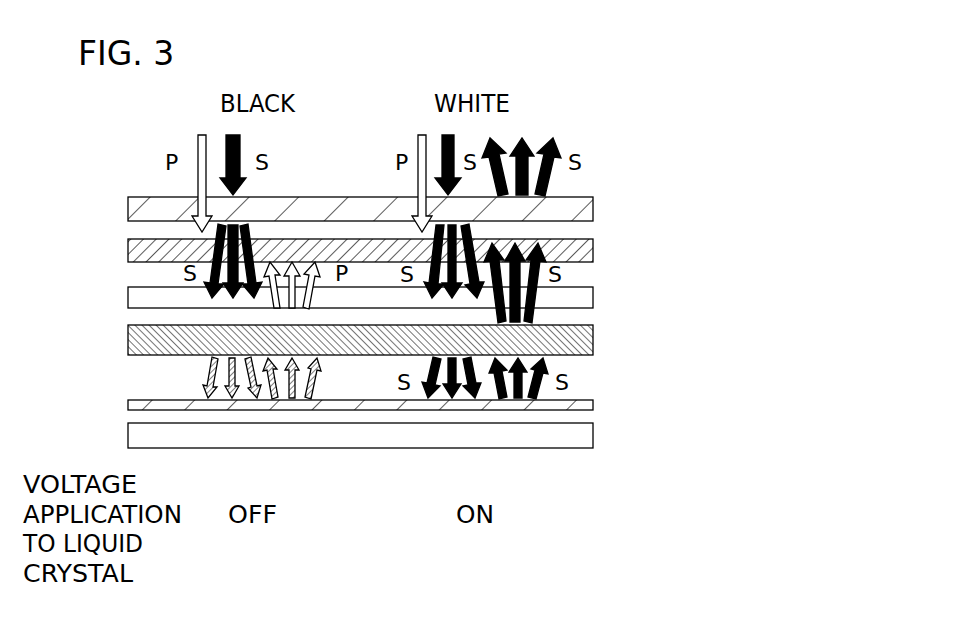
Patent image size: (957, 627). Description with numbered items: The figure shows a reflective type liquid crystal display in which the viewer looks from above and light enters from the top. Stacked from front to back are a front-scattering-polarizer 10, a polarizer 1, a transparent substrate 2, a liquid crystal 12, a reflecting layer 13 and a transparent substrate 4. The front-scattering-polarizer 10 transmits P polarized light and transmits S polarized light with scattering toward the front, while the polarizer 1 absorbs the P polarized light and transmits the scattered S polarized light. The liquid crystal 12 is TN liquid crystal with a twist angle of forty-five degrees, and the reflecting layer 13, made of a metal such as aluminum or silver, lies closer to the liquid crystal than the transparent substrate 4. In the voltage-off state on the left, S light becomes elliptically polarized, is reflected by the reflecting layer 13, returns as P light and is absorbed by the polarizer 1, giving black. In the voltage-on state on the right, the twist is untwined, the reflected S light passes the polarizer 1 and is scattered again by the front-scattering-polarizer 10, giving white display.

The front-scattering-polarizer 10 is at (593, 208).
The polarizer 1 is at (593, 249).
The transparent substrate 2 is at (593, 297).
The liquid crystal 12 is at (593, 341).
The reflecting layer 13 is at (593, 405).
The transparent substrate 4 is at (593, 436).